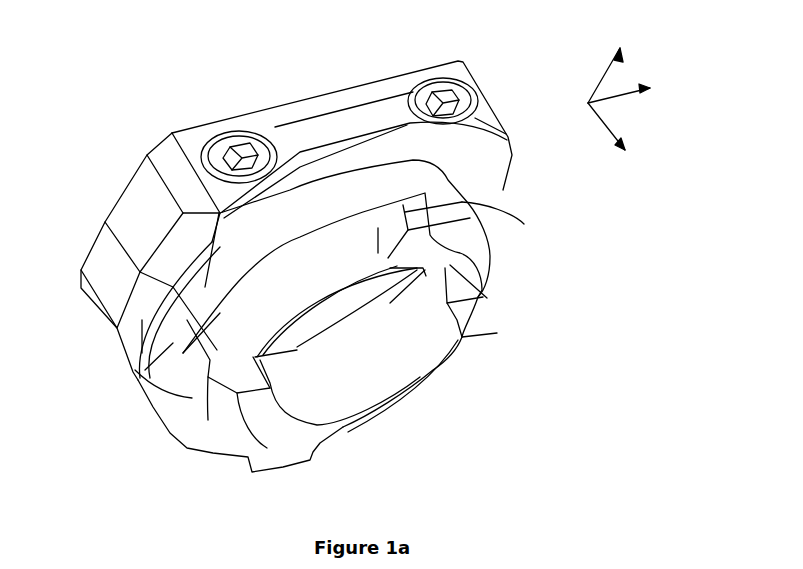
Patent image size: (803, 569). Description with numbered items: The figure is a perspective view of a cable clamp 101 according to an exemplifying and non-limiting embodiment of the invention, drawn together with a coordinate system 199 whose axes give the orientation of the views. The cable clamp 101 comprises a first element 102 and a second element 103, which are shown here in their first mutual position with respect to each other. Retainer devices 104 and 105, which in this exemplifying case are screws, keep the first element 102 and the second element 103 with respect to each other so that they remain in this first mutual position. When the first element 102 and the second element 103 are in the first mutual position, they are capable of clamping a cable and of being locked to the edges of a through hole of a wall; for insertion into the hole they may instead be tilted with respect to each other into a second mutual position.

The cable clamp 101 is at (328, 247).
The first element 102 is at (525, 230).
The second element 103 is at (410, 407).
The retainer device 104 is at (220, 150).
The retainer device 105 is at (425, 92).
The coordinate system 199 is at (666, 74).